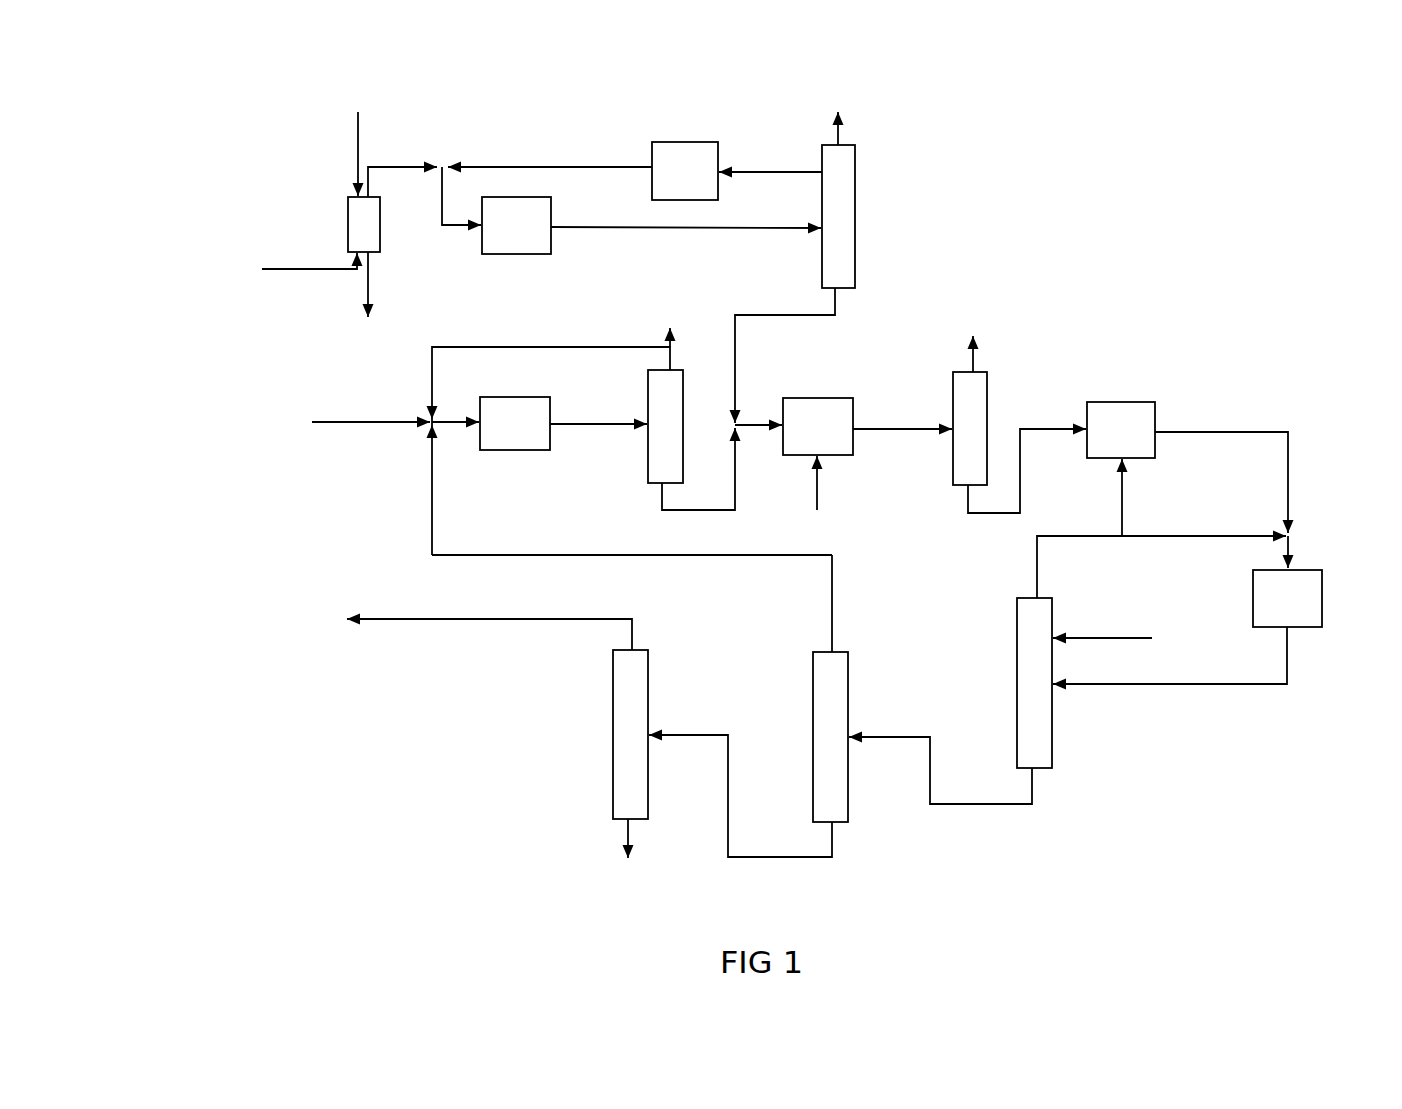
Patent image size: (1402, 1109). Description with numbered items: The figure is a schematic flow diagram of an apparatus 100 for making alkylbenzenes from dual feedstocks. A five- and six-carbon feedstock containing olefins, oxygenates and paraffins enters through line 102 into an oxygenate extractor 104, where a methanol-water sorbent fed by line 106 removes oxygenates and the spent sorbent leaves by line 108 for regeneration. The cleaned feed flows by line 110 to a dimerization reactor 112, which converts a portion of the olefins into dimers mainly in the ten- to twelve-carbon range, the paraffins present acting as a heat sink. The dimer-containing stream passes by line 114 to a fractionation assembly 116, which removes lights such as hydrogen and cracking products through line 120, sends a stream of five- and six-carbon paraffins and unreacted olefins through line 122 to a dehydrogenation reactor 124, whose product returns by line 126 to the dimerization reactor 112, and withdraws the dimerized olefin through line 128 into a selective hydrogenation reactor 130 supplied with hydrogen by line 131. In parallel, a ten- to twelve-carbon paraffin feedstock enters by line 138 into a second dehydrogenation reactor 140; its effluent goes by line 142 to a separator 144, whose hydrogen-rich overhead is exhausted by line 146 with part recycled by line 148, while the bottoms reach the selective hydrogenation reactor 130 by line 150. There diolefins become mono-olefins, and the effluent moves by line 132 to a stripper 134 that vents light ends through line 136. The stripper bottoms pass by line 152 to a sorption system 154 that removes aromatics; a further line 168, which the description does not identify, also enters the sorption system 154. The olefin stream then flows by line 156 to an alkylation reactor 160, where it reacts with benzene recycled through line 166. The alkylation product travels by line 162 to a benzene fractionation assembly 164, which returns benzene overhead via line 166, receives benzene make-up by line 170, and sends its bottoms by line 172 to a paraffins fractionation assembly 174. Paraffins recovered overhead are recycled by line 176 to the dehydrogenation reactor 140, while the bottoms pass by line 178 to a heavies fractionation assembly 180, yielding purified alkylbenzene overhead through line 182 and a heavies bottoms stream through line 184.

The apparatus 100 is at (228, 140).
The line 102 is at (292, 270).
The oxygenate extractor 104 is at (360, 220).
The line 106 is at (357, 165).
The line 108 is at (367, 290).
The line 110 is at (397, 167).
The dimerization reactor 112 is at (508, 235).
The line 114 is at (650, 228).
The fractionation assembly 116 is at (857, 198).
The line 120 is at (840, 133).
The line 122 is at (783, 168).
The dehydrogenation reactor 124 is at (685, 160).
The line 126 is at (577, 167).
The line 128 is at (790, 313).
The selective hydrogenation reactor 130 is at (808, 413).
The line 131 is at (818, 495).
The line 132 is at (913, 432).
The stripper 134 is at (972, 400).
The line 136 is at (968, 360).
The line 138 is at (360, 425).
The dehydrogenation reactor 140 is at (503, 430).
The line 142 is at (612, 422).
The separator 144 is at (658, 432).
The line 146 is at (668, 357).
The line 148 is at (568, 342).
The line 150 is at (737, 467).
The line 152 is at (998, 515).
The sorption system 154 is at (1118, 422).
The line 156 is at (1237, 428).
The alkylation reactor 160 is at (1302, 602).
The line 162 is at (1182, 685).
The benzene fractionation assembly 164 is at (1038, 722).
The line 166 is at (1063, 537).
The line 168 is at (1122, 505).
The line 170 is at (1118, 637).
The line 172 is at (970, 807).
The paraffins fractionation assembly 174 is at (835, 707).
The line 176 is at (782, 560).
The line 178 is at (690, 732).
The heavies fractionation assembly 180 is at (627, 713).
The line 182 is at (450, 620).
The line 184 is at (627, 837).